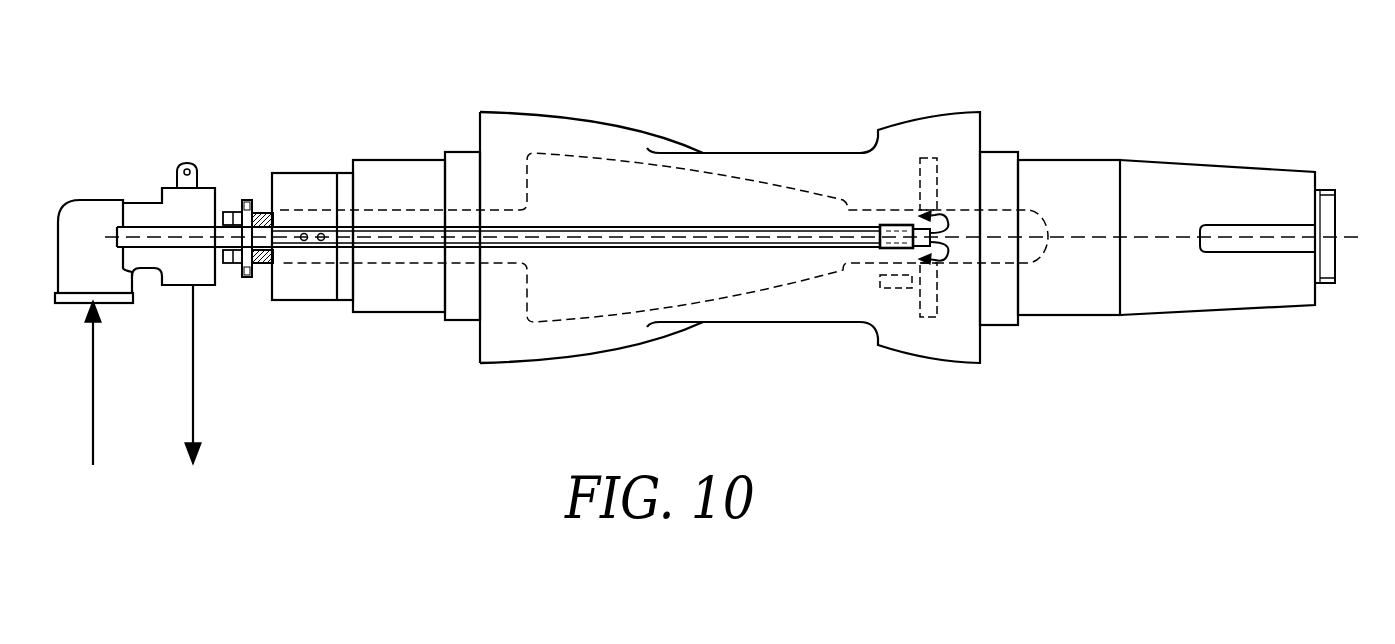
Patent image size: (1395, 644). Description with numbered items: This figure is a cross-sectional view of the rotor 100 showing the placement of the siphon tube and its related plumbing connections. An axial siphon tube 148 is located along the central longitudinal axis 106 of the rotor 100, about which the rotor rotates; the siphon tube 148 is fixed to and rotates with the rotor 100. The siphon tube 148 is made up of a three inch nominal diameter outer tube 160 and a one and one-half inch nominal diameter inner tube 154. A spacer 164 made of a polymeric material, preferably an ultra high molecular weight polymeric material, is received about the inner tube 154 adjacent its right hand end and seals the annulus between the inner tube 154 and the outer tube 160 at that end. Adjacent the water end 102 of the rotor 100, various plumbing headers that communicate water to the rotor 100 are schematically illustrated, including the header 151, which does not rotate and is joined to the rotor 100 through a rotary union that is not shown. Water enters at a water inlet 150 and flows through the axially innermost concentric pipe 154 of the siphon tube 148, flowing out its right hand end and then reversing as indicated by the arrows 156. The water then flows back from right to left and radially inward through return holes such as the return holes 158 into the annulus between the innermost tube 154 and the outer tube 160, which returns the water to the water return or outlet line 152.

The rotor 100 is at (1127, 109).
The first end 102 is at (273, 300).
The central longitudinal axis 106 is at (1350, 236).
The axial siphon tube 148 is at (560, 226).
The water inlet 150 is at (94, 398).
The header 151 is at (78, 200).
The water outlet 152 is at (194, 408).
The inner tube 154 is at (128, 205).
The arrows 156 is at (933, 210).
The return holes 158 is at (321, 233).
The outer tube 160 is at (380, 223).
The spacer 164 is at (890, 244).